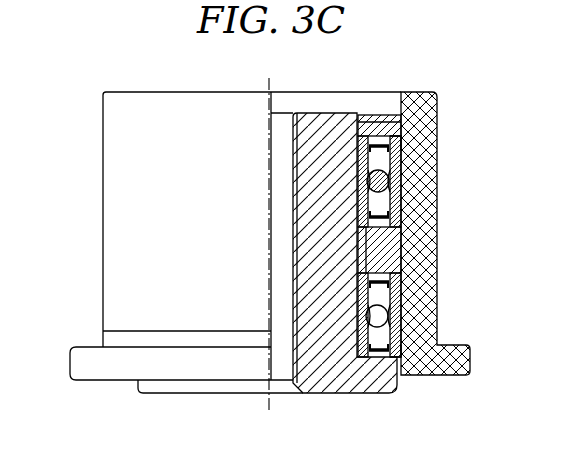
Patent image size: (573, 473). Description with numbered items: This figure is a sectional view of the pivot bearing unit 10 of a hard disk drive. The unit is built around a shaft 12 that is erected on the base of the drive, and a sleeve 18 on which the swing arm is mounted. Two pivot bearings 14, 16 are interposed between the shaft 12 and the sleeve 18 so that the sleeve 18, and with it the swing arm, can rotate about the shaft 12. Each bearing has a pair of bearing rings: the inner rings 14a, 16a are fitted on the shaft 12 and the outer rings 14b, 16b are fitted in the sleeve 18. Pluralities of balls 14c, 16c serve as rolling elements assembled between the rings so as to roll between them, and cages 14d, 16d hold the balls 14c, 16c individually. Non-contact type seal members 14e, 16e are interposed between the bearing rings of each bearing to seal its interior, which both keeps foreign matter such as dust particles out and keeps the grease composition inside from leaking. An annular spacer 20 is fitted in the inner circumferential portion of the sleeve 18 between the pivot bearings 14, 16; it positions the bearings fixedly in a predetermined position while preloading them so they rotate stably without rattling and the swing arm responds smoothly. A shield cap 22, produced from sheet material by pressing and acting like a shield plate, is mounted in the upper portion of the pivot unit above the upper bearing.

The pivot bearing unit 10 is at (446, 90).
The shaft 12 is at (331, 112).
The pivot bearing 14 is at (345, 148).
The inner ring 14a is at (360, 208).
The outer ring 14b is at (404, 200).
The balls 14c is at (404, 178).
The cage 14d is at (408, 128).
The seal member 14e is at (378, 143).
The pivot bearing 16 is at (345, 354).
The inner ring 16a is at (360, 312).
The outer ring 16b is at (404, 340).
The balls 16c is at (404, 318).
The cage 16d is at (434, 366).
The seal member 16e is at (405, 280).
The sleeve 18 is at (421, 92).
The annular spacer 20 is at (404, 250).
The shield cap 22 is at (410, 118).